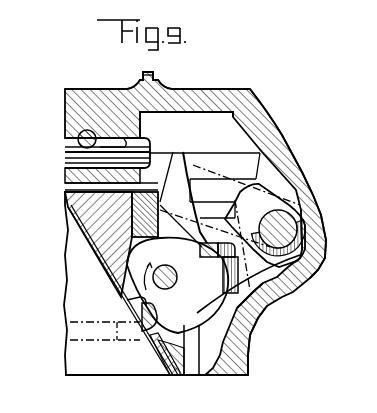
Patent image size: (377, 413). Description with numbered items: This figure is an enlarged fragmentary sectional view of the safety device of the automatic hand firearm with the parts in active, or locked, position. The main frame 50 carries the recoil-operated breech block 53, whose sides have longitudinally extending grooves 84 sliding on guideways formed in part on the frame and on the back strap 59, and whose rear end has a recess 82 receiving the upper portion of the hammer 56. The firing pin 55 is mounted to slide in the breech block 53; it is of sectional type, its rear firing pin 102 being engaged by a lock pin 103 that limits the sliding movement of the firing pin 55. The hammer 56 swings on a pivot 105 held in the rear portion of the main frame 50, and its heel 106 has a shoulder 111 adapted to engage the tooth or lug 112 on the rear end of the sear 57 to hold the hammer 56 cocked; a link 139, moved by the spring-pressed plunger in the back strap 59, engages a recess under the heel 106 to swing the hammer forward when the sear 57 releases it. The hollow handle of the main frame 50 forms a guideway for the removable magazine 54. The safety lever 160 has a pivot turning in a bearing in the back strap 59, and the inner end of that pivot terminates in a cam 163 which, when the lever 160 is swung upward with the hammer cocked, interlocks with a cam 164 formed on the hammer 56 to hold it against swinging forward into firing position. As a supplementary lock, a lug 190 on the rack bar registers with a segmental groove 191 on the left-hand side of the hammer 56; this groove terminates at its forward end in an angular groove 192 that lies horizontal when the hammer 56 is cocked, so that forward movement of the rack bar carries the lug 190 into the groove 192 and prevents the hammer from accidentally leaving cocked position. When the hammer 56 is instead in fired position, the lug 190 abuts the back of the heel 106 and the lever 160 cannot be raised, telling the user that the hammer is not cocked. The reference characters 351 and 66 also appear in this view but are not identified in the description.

The breech block 53 is at (92, 96).
The projection 351 is at (157, 87).
The recess 82 is at (245, 138).
The rear firing pin 102 is at (150, 139).
The lock pin 103 is at (72, 130).
The firing pin 55 is at (66, 153).
The main frame 50 is at (82, 210).
The angular groove 192 is at (162, 210).
The lever 66 is at (184, 168).
The safety lever 160 is at (208, 165).
The grooves 84 is at (212, 198).
The cam 164 is at (251, 248).
The hammer 56 is at (304, 175).
The cam 163 is at (285, 230).
The lug 190 is at (182, 285).
The pivot 105 is at (168, 268).
The shoulder 111 is at (129, 299).
The tooth 112 is at (156, 311).
The link 139 is at (190, 374).
The sear 57 is at (83, 333).
The magazine 54 is at (88, 367).
The segmental groove 191 is at (257, 319).
The heel 106 is at (251, 342).
The back strap 59 is at (250, 362).